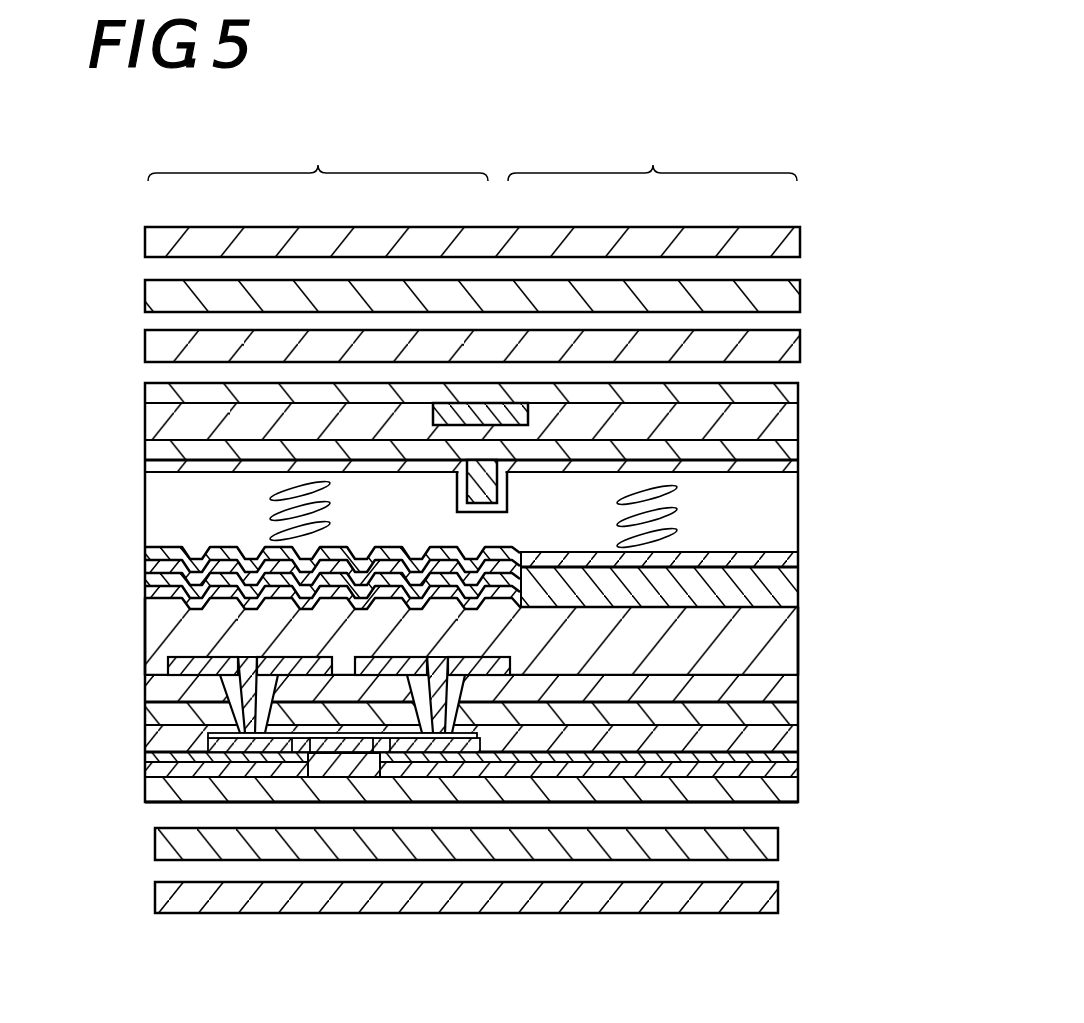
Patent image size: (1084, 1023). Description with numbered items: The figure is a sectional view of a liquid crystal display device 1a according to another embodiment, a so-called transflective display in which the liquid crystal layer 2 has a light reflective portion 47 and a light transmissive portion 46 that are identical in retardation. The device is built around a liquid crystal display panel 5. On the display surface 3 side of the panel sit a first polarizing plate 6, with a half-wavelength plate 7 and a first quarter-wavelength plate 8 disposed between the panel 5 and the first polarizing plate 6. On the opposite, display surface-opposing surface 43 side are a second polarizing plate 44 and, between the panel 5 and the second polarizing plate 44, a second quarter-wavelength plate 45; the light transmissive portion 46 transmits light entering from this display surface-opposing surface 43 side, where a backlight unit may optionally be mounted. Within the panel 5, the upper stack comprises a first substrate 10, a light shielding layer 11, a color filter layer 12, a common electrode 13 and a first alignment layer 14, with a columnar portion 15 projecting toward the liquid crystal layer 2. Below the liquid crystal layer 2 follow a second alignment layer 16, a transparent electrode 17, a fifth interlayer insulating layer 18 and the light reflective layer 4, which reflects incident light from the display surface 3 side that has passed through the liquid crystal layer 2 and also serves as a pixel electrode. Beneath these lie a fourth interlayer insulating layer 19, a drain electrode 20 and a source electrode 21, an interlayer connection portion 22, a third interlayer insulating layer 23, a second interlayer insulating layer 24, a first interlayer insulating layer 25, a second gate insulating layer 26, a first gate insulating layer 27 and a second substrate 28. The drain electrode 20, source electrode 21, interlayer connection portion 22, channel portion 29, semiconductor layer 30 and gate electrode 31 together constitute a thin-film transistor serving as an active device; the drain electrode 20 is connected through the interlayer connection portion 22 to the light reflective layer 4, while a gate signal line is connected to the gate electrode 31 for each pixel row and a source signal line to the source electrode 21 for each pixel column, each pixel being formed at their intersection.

The liquid crystal display device 1a is at (745, 70).
The liquid crystal layer 2 is at (172, 517).
The display surface 3 is at (711, 227).
The light reflective layer 4 is at (183, 592).
The liquid crystal display panel 5 is at (871, 378).
The first polarizing plate 6 is at (778, 240).
The half-wavelength plate 7 is at (778, 296).
The first quarter-wavelength plate 8 is at (778, 345).
The first substrate 10 is at (778, 389).
The light shielding layer 11 is at (455, 413).
The color filter layer 12 is at (778, 425).
The common electrode 13 is at (778, 451).
The first alignment layer 14 is at (778, 466).
The columnar portion 15 is at (487, 493).
The second alignment layer 16 is at (780, 558).
The transparent electrode 17 is at (162, 568).
The fifth interlayer insulating layer 18 is at (168, 583).
The fourth interlayer insulating layer 19 is at (780, 640).
The drain electrode 20 is at (497, 662).
The source electrode 21 is at (178, 665).
The interlayer connection portion 22 is at (215, 708).
The third interlayer insulating layer 23 is at (785, 690).
The second interlayer insulating layer 24 is at (780, 715).
The first interlayer insulating layer 25 is at (778, 742).
The second gate insulating layer 26 is at (768, 760).
The first gate insulating layer 27 is at (757, 772).
The second substrate 28 is at (740, 793).
The channel portion 29 is at (335, 740).
The semiconductor layer 30 is at (248, 745).
The gate electrode 31 is at (357, 772).
The display surface-opposing surface 43 is at (600, 913).
The second polarizing plate 44 is at (750, 898).
The second quarter-wavelength plate 45 is at (762, 843).
The light transmissive portion 46 is at (652, 159).
The light reflective portion 47 is at (318, 159).